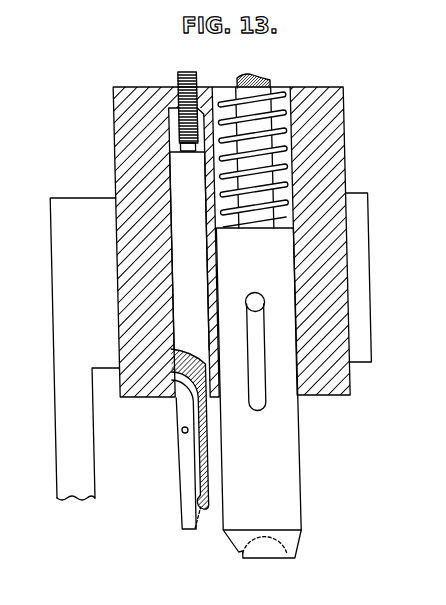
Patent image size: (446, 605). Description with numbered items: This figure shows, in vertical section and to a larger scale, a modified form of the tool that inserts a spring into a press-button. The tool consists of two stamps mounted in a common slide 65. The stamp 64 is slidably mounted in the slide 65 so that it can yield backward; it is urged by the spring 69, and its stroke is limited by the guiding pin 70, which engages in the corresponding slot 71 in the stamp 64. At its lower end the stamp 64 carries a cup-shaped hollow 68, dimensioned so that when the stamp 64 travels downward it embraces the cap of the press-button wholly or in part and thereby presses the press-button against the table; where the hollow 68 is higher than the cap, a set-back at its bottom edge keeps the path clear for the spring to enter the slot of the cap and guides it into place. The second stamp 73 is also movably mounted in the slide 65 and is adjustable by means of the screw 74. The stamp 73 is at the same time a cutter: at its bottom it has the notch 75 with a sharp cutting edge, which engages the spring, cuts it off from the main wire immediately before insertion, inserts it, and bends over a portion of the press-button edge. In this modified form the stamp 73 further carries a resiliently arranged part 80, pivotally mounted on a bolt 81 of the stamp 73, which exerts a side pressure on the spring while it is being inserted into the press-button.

The stamp 64 is at (258, 379).
The slide 65 is at (123, 248).
The cup-shaped hollow 68 is at (257, 528).
The spring 69 is at (277, 91).
The guiding pin 70 is at (262, 297).
The slot 71 is at (265, 398).
The stamp 73 is at (189, 251).
The screw 74 is at (202, 73).
The notch 75 is at (195, 502).
The resiliently arranged part 80 is at (178, 452).
The bolt 81 is at (179, 430).